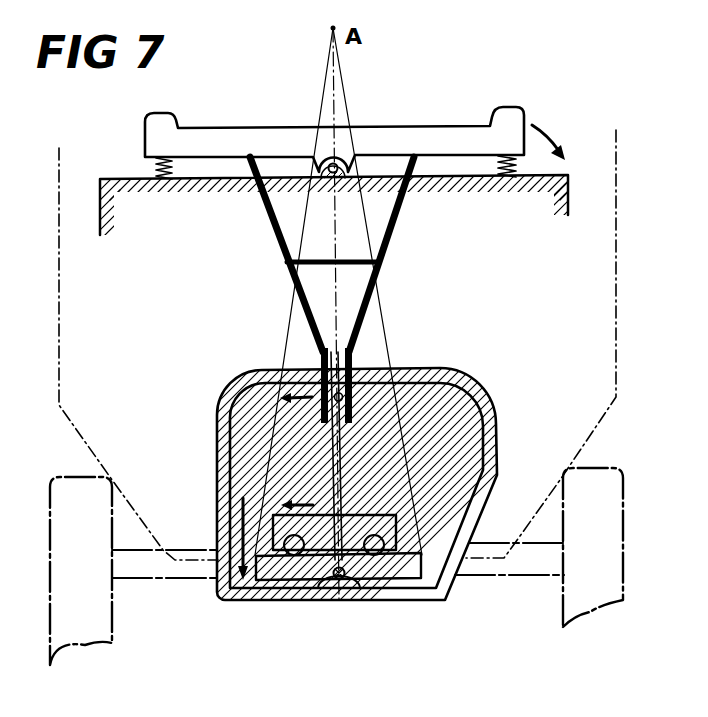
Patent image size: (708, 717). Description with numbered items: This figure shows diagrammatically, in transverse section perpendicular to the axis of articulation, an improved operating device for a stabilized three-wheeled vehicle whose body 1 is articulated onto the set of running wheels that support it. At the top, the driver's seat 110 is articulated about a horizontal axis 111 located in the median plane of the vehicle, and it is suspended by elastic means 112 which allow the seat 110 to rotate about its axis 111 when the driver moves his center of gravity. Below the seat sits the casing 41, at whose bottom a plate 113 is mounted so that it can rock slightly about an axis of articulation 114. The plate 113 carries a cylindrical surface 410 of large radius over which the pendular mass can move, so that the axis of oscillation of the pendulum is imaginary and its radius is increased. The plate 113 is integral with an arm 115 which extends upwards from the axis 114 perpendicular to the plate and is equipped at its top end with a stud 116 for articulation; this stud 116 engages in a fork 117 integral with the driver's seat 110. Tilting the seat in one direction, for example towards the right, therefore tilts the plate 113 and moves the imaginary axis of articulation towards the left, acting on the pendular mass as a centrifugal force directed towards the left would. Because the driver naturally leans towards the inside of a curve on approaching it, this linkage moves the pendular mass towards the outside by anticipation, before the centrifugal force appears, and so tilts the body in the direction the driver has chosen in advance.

The body 1 is at (621, 289).
The casing 41 is at (440, 375).
The driver's seat 110 is at (486, 125).
The horizontal axis 111 is at (340, 181).
The elastic means 112 is at (157, 170).
The plate 113 is at (390, 565).
The axis of articulation 114 is at (322, 580).
The arm 115 is at (330, 473).
The stud 116 is at (321, 360).
The fork 117 is at (360, 368).
The cylindrical surface 410 is at (408, 552).